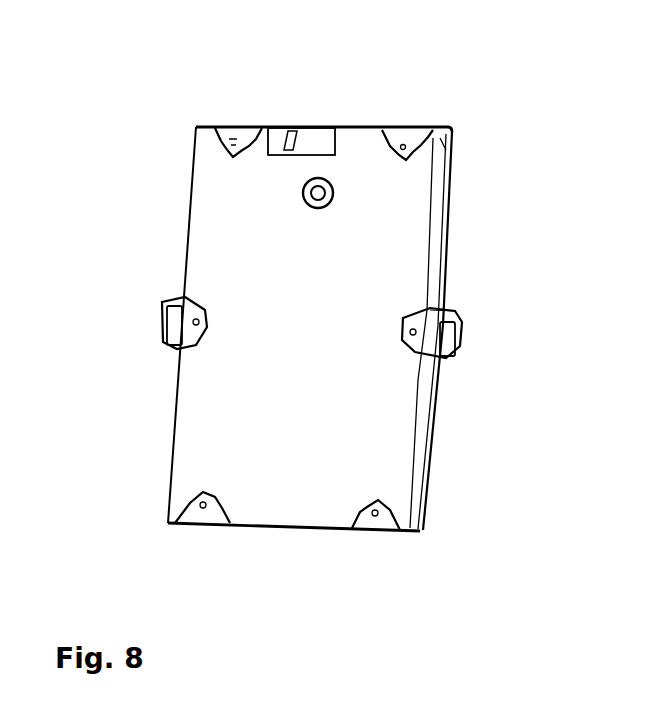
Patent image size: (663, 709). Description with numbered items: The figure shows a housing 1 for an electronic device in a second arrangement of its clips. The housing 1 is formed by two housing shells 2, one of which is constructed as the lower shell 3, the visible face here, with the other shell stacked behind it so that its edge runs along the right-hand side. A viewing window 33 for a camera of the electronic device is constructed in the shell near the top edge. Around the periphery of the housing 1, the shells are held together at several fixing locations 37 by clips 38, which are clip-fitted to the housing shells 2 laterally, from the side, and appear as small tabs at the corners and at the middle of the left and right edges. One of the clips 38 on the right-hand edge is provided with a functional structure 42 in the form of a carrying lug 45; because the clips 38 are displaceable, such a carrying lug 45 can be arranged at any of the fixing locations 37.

The housing 1 is at (203, 97).
The housing shell 2 is at (418, 174).
The lower shell 3 is at (407, 220).
The viewing window 33 is at (319, 188).
The fixing location 37 is at (243, 121).
The clip 38 is at (197, 127).
The functional structure 42 is at (450, 366).
The carrying lug 45 is at (458, 320).